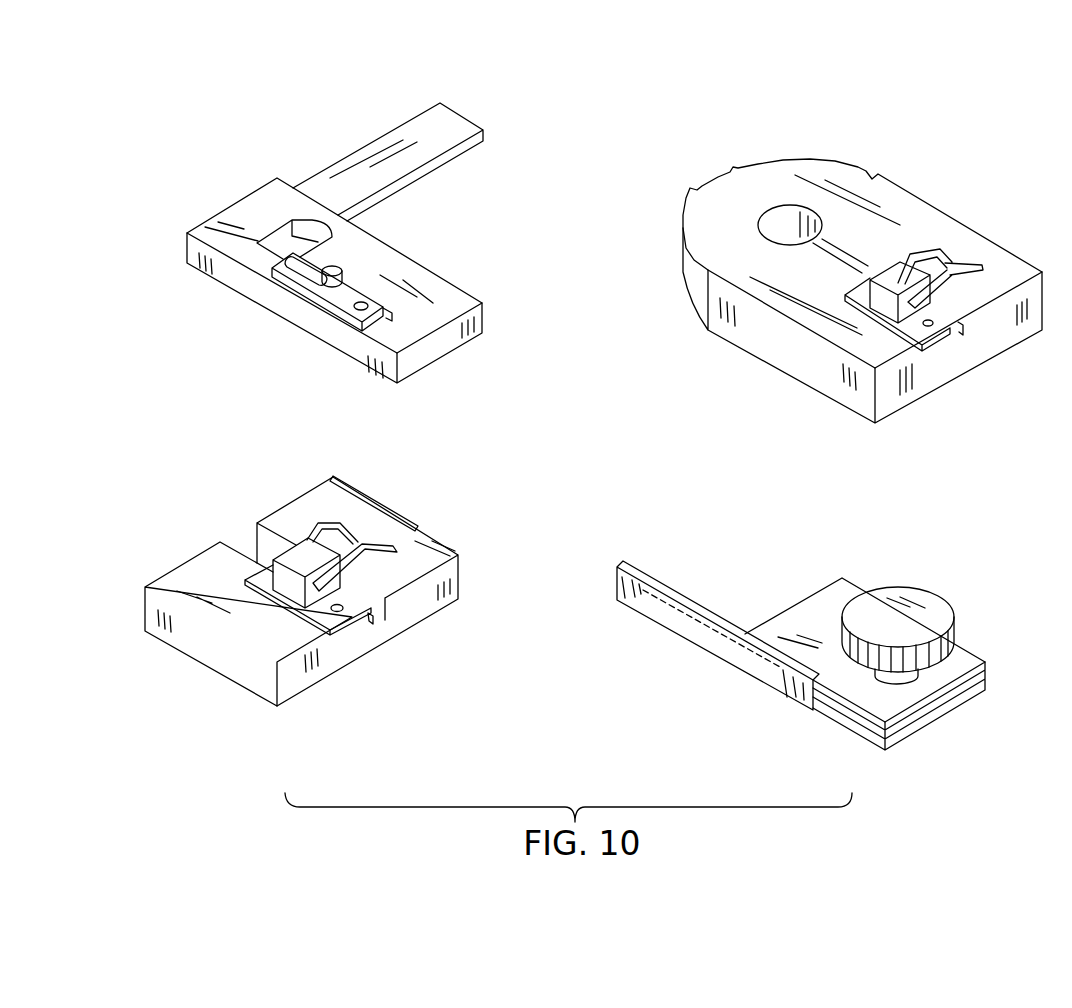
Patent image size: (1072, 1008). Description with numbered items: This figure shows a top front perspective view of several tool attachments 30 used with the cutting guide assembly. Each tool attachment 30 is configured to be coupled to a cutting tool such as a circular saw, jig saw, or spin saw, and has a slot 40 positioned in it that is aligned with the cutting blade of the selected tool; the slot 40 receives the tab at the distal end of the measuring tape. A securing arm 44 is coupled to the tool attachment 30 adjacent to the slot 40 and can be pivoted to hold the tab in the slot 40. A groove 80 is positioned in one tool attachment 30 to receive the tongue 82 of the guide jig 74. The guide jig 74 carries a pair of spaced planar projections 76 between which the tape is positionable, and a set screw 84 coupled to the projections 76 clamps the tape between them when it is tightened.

The tool attachment 30 is at (457, 289).
The slot 40 is at (393, 320).
The securing arm 44 is at (312, 258).
The guide jig 74 is at (833, 588).
The spaced planar projections 76 is at (985, 690).
The groove 80 is at (393, 510).
The tongue 82 is at (815, 713).
The set screw 84 is at (930, 623).